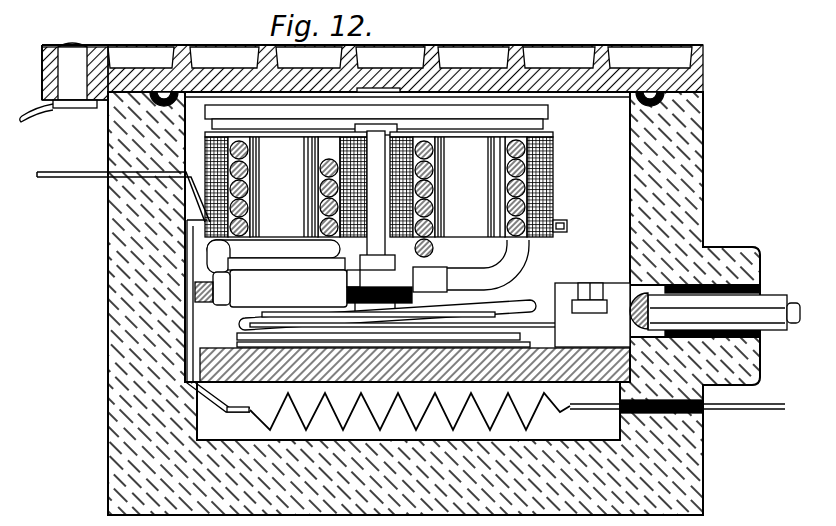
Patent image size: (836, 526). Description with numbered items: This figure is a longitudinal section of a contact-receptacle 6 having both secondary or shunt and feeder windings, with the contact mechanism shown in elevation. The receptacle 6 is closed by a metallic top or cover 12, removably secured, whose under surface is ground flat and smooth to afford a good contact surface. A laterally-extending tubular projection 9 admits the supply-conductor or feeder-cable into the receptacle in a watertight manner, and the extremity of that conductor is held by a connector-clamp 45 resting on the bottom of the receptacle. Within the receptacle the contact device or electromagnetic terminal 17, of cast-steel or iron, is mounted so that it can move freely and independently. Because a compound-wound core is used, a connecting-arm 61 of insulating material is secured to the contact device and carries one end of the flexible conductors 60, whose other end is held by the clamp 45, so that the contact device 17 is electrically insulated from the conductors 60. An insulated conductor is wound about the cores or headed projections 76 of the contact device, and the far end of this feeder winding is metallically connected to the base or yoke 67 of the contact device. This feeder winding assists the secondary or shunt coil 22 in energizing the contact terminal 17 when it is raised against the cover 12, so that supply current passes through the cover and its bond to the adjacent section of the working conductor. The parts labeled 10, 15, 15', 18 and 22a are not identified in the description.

The contact-receptacle 6 is at (704, 155).
The laterally-extending tubular projection 9 is at (727, 252).
The plunger rod 10 is at (791, 299).
The metallic top or cover 12 is at (361, 72).
The coil 15 is at (394, 194).
The lead conductor 15' is at (677, 417).
The contact device 17 is at (549, 112).
The spring 18 is at (410, 415).
The secondary or shunt coil 22 is at (123, 186).
The lead wire 22a is at (523, 247).
The connector-clamp 45 is at (592, 315).
The flexible conductors 60 is at (374, 317).
The connecting-arm 61 is at (346, 293).
The base or yoke 67 is at (271, 273).
The cores or headed projections 76 is at (377, 187).